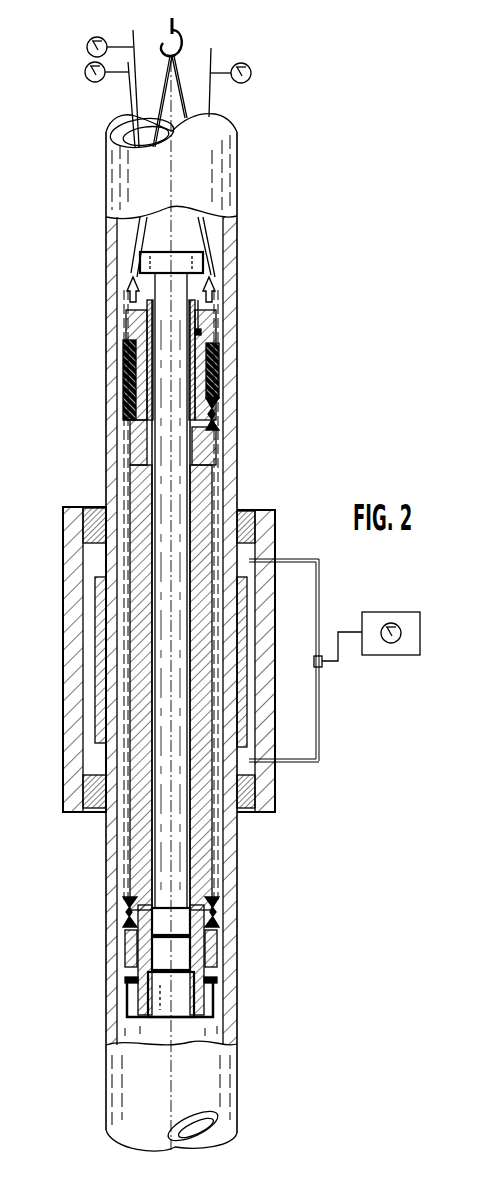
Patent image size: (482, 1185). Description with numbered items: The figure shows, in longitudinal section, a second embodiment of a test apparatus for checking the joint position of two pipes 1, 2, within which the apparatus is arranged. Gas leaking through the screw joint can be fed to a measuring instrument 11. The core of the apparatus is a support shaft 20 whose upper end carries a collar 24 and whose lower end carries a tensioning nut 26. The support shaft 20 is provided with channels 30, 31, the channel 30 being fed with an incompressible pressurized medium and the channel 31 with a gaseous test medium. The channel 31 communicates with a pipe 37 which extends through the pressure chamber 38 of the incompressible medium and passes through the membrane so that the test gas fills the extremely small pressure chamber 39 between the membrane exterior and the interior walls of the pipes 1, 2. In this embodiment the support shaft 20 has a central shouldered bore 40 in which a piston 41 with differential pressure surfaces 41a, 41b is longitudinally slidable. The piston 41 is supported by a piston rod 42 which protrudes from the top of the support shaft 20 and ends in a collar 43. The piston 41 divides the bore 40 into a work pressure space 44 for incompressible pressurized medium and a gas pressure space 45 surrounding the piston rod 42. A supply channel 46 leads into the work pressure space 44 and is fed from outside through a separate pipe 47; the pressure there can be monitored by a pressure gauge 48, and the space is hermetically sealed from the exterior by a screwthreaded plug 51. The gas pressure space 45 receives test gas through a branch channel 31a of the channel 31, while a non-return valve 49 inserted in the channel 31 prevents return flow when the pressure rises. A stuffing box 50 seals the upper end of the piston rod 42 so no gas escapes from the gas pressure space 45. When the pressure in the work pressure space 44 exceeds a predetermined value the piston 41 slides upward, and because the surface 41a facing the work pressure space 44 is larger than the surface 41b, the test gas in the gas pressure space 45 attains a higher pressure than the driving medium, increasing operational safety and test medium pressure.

The pipe 1 is at (116, 265).
The pipe 2 is at (237, 1025).
The measuring instrument 11 is at (420, 633).
The support shaft 20 is at (203, 840).
The collar 24 is at (130, 317).
The tensioning nut 26 is at (212, 1000).
The channel 30 is at (140, 432).
The channel 31 is at (213, 418).
The branch channel 31a is at (210, 447).
The pipe 37 is at (213, 492).
The pressure chamber 38 is at (130, 760).
The pressure chamber 39 is at (220, 797).
The central shouldered bore 40 is at (152, 813).
The piston 41 is at (183, 923).
The differential pressure surface 41a is at (162, 940).
The differential pressure surface 41b is at (188, 898).
The piston rod 42 is at (180, 283).
The collar 43 is at (203, 262).
The work pressure space 44 is at (182, 955).
The gas pressure space 45 is at (183, 872).
The supply channel 46 is at (140, 862).
The pipe 47 is at (133, 32).
The pressure gauge 48 is at (87, 45).
The non-return valve 49 is at (201, 331).
The stuffing box 50 is at (150, 327).
The screwthreaded plug 51 is at (162, 998).